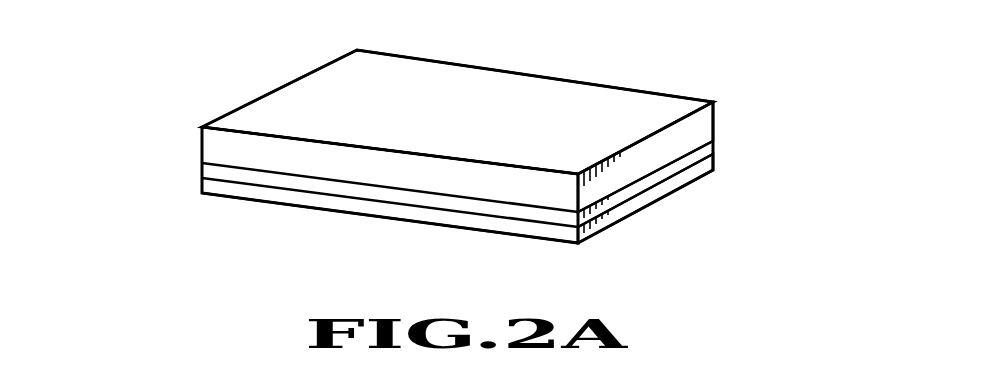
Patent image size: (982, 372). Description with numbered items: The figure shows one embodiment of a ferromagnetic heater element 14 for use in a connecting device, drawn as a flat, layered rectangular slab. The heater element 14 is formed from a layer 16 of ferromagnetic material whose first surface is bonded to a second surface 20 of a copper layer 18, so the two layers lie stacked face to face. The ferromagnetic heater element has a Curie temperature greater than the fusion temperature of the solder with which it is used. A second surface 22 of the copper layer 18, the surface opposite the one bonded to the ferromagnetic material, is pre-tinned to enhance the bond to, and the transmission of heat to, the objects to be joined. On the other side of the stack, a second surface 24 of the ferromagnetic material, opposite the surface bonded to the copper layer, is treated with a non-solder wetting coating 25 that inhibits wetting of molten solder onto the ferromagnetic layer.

The ferromagnetic heater element 14 is at (538, 63).
The layer of ferromagnetic material 16 is at (202, 172).
The copper layer 18 is at (708, 128).
The second surface of the copper layer 20 is at (202, 163).
The second surface of the copper layer 22 is at (660, 100).
The second surface of the ferromagnetic material 24 is at (618, 207).
The non-solder wetting coating 25 is at (695, 173).